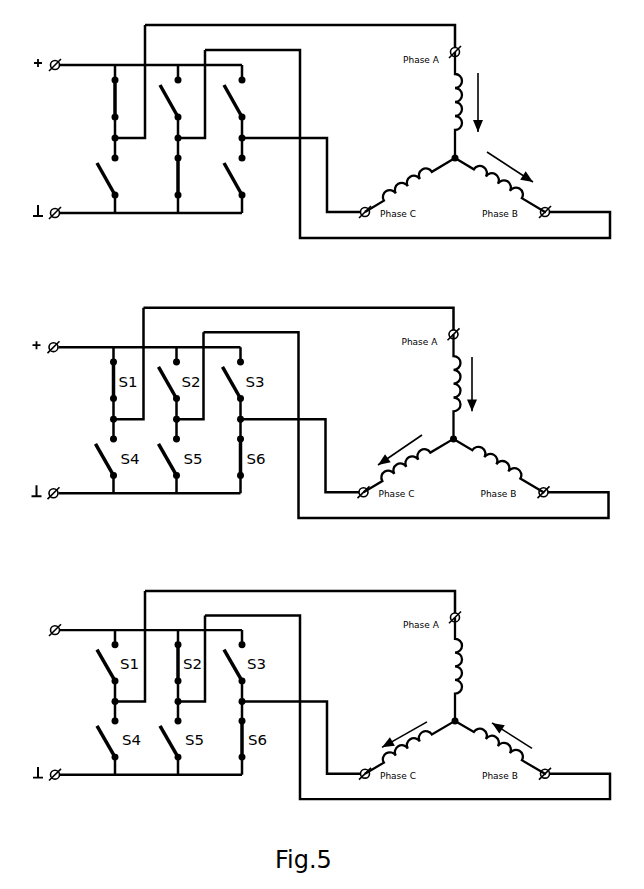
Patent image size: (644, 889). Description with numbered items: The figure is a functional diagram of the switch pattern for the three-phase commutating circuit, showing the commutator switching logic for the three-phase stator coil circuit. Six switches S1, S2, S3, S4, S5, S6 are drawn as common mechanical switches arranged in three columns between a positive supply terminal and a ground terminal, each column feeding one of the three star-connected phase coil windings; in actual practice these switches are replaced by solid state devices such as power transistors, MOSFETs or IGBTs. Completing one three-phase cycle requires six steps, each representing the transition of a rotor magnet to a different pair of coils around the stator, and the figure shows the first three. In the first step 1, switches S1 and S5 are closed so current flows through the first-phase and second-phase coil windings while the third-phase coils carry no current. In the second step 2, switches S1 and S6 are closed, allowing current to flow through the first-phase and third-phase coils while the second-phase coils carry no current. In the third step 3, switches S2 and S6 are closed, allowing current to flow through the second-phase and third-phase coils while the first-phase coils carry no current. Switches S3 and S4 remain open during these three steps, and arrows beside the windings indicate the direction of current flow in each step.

The first step 1 is at (321, 131).
The second step 2 is at (320, 413).
The third step 3 is at (321, 695).
The switch S1 is at (126, 99).
The switch S2 is at (181, 99).
The switch S3 is at (245, 99).
The switch S4 is at (119, 177).
The switch S5 is at (190, 177).
The switch S6 is at (245, 177).